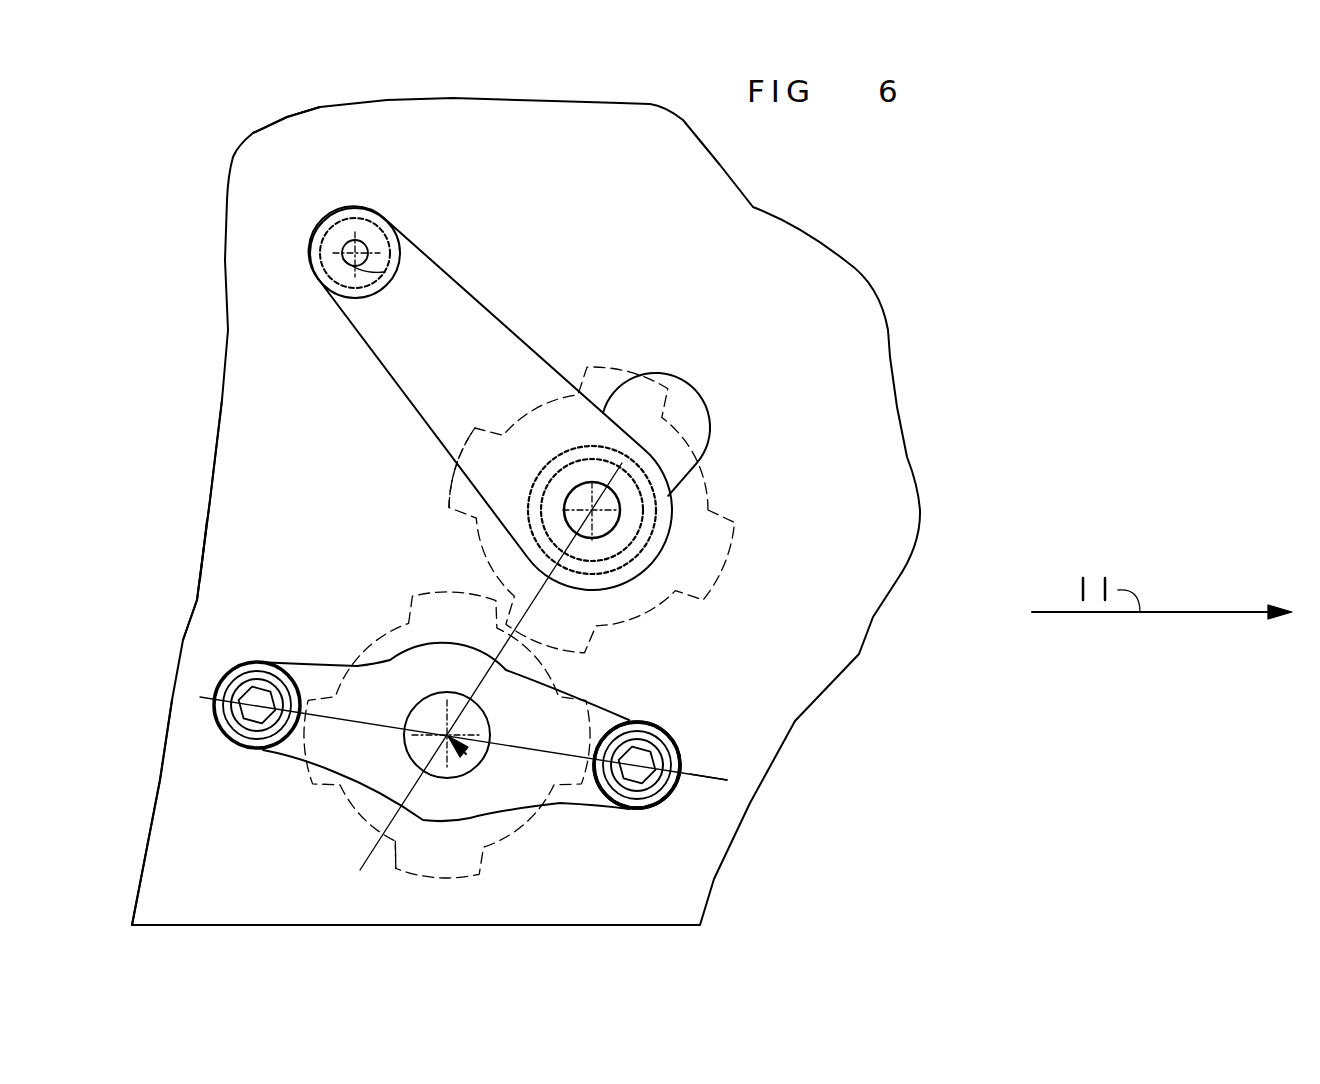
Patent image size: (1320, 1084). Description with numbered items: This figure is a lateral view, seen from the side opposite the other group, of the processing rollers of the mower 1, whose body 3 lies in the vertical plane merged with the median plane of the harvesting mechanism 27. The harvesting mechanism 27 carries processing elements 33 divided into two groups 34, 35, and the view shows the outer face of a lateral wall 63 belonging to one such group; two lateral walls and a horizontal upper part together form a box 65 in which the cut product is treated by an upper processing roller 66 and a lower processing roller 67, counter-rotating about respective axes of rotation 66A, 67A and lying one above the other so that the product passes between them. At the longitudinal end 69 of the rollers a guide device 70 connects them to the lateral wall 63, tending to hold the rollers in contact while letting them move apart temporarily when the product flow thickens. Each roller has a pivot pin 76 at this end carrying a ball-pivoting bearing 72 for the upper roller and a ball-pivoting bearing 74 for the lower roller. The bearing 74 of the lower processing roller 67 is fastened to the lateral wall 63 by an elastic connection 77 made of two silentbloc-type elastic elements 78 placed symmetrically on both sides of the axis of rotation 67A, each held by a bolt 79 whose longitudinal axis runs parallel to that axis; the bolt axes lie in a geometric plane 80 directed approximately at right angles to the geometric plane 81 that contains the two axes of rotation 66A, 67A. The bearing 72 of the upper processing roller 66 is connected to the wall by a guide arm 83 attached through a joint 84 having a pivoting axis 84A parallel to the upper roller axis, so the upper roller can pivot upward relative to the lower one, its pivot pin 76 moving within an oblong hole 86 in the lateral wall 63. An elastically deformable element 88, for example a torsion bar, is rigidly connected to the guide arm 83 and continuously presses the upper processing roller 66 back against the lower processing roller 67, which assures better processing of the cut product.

The mower 1 is at (188, 164).
The body 3 is at (138, 721).
The harvesting mechanism 27 is at (196, 602).
The processing elements 33 is at (141, 845).
The group of processing elements 34 is at (203, 528).
The group of processing elements 35 is at (203, 550).
The lateral wall 63 is at (243, 362).
The box 65 is at (221, 452).
The upper processing roller 66 is at (590, 366).
The axis of rotation 66A is at (567, 500).
The lower processing roller 67 is at (408, 596).
The axis of rotation 67A is at (475, 872).
The longitudinal end 69 is at (600, 537).
The guide device 70 is at (407, 233).
The ball-pivoting bearing 72 is at (591, 510).
The ball-pivoting bearing 74 is at (287, 755).
The pivot pin 76 is at (613, 530).
The elastic connection 77 is at (656, 803).
The elastic element 78 is at (242, 730).
The bolt 79 is at (238, 683).
The geometric plane 80 is at (697, 775).
The geometric plane 81 is at (360, 872).
The guide arm 83 is at (357, 208).
The joint 84 is at (322, 227).
The pivoting axis 84A is at (353, 258).
The oblong hole 86 is at (715, 405).
The elastically deformable element 88 is at (367, 265).